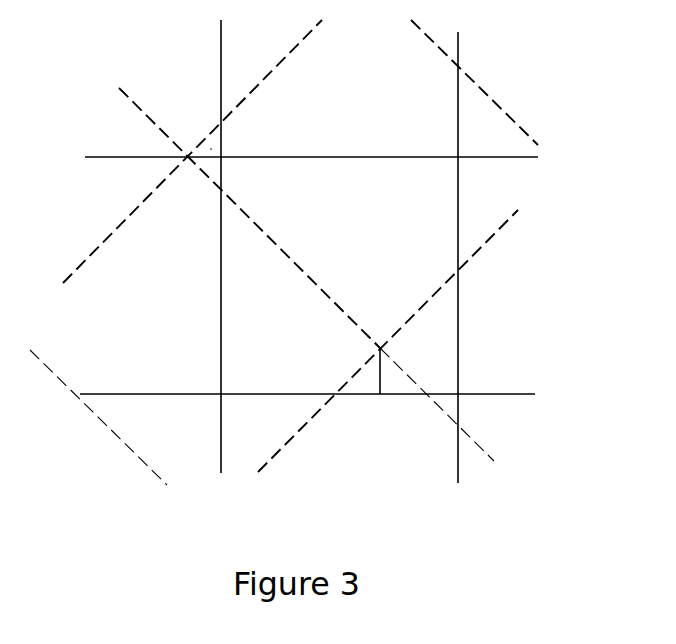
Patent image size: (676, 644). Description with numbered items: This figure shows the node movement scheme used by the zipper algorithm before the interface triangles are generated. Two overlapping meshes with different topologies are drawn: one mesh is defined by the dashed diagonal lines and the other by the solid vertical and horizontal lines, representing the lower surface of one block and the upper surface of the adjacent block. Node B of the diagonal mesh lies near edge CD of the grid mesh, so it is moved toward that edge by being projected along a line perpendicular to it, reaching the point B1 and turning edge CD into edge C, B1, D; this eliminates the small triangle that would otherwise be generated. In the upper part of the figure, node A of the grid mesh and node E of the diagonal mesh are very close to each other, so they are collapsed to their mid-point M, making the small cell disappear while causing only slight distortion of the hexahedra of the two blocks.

The mid-point M is at (208, 144).
The node A is at (311, 150).
The node B is at (388, 341).
The projected node B1 is at (383, 387).
The node C is at (233, 246).
The node D is at (307, 257).
The node E is at (221, 184).